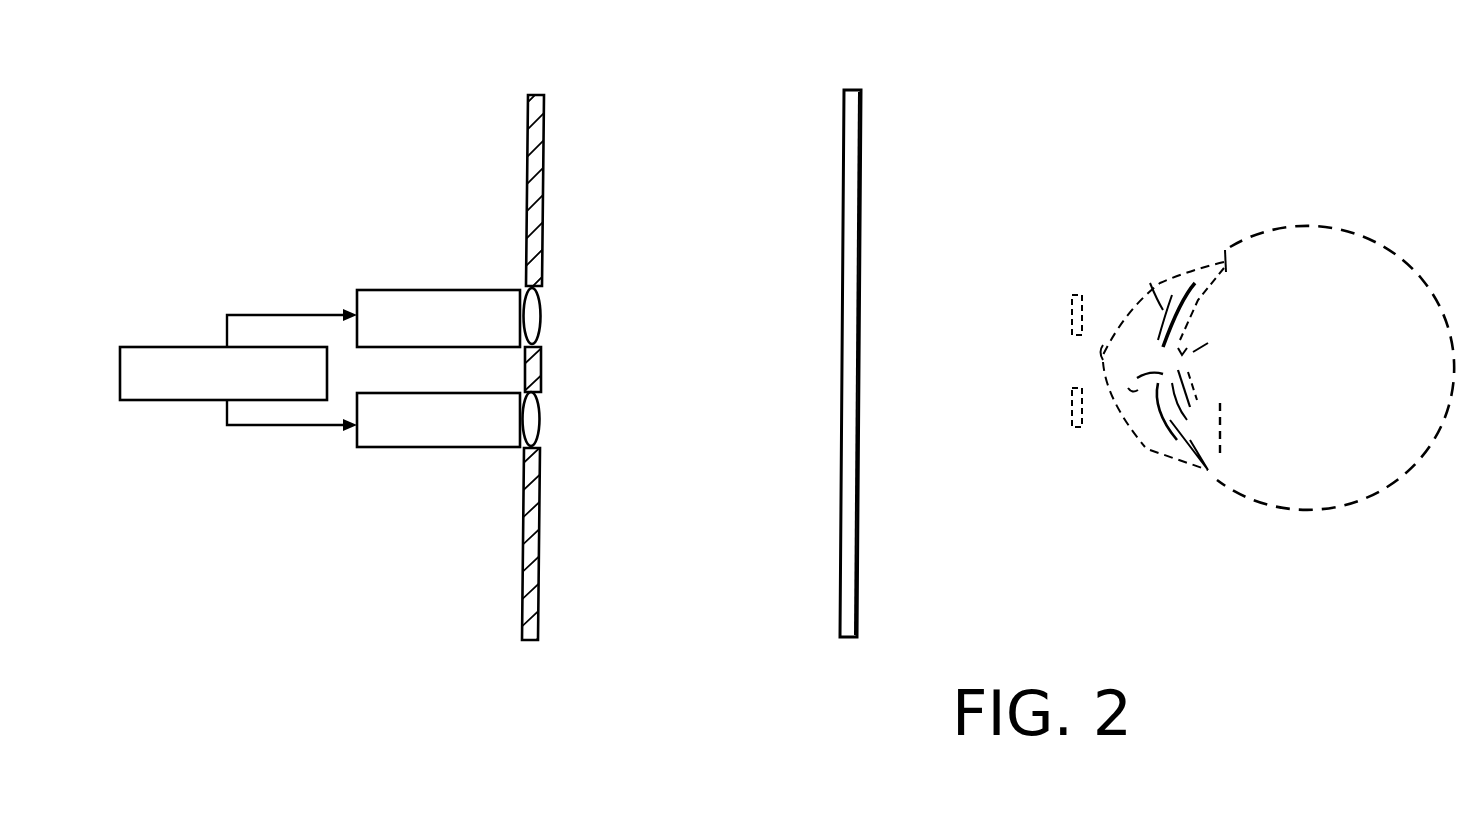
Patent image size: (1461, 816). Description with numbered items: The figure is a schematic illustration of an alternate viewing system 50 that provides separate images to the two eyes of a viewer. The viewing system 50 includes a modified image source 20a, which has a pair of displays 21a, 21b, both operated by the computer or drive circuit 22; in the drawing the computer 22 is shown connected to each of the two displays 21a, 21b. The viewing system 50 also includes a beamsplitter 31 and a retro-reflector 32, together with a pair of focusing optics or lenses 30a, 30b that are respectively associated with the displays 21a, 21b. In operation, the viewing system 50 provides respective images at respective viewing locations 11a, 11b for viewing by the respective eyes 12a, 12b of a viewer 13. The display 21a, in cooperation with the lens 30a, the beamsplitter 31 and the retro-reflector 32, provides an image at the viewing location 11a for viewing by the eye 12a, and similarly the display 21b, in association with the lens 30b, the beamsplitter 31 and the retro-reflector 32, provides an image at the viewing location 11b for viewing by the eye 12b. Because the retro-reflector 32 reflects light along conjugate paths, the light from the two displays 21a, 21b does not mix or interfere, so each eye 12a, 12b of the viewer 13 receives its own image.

The viewing location 11a is at (1068, 272).
The viewing location 11b is at (1077, 448).
The eye 12a is at (1150, 290).
The eye 12b is at (1167, 407).
The viewer 13 is at (1395, 232).
The modified image source 20a is at (373, 266).
The display 21a is at (470, 290).
The display 21b is at (467, 447).
The computer or drive circuit 22 is at (157, 347).
The focusing optics or lens 30a is at (541, 316).
The focusing optics or lens 30b is at (541, 418).
The beamsplitter 31 is at (844, 108).
The retro-reflector 32 is at (545, 110).
The viewing system 50 is at (889, 45).